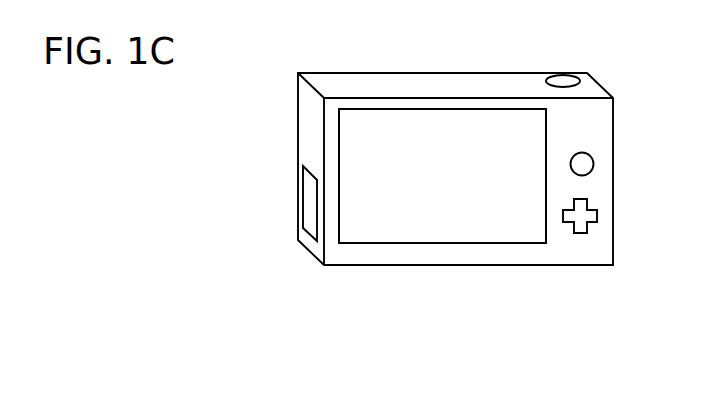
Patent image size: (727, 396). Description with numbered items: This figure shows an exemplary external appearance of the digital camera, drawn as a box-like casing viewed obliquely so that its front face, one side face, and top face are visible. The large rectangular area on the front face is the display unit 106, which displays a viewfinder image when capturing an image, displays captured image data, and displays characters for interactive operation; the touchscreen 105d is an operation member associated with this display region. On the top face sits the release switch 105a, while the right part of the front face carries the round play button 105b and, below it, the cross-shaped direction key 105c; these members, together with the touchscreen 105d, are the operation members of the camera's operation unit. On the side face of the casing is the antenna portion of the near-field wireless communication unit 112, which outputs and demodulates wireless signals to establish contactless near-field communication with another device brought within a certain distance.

The release switch 105a is at (571, 81).
The play button 105b is at (594, 165).
The direction key 105c is at (597, 216).
The touchscreen 105d is at (384, 109).
The display unit 106 is at (546, 148).
The near-field wireless communication unit 112 is at (303, 202).